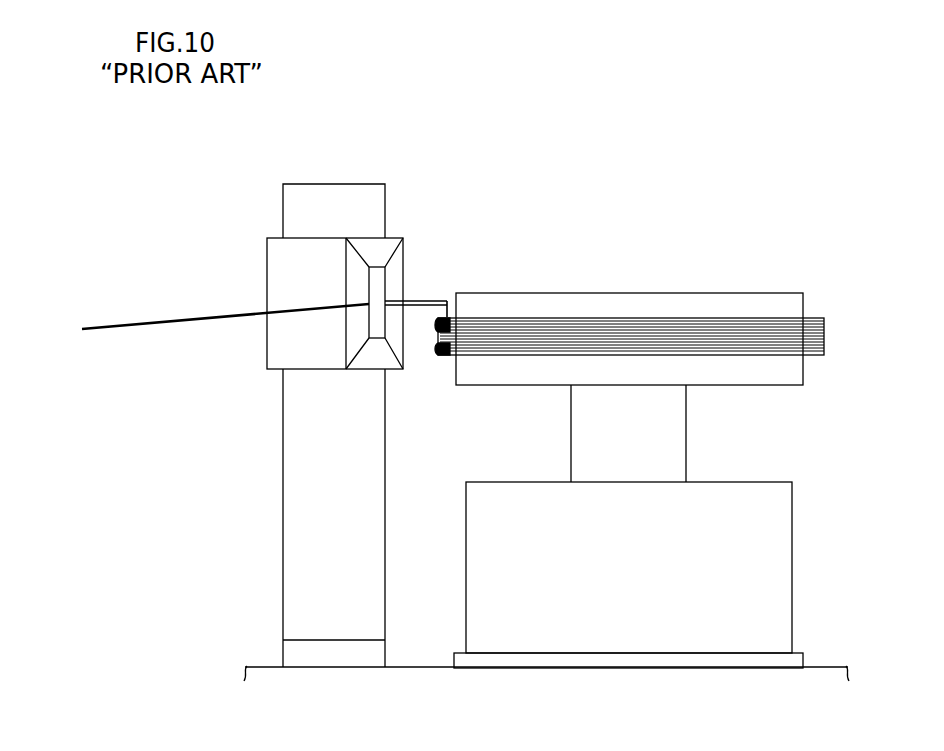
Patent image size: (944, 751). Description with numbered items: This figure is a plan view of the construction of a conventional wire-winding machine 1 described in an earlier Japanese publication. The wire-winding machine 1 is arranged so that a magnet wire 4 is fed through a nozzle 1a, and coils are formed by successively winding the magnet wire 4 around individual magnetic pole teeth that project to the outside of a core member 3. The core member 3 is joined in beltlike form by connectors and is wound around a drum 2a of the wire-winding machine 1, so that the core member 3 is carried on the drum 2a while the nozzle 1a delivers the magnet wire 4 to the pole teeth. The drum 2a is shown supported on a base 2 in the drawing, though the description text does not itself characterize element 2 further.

The wire-winding machine 1 is at (399, 259).
The nozzle 1a is at (432, 302).
The base 2 is at (733, 490).
The drum 2a is at (512, 376).
The core member 3 is at (745, 333).
The magnet wire 4 is at (145, 324).